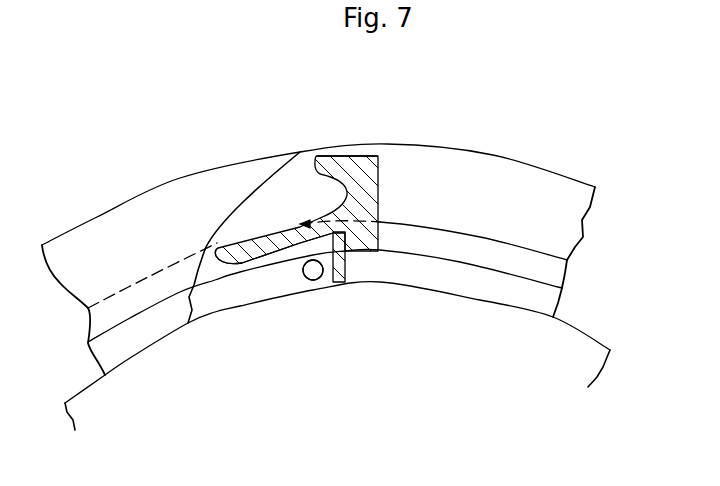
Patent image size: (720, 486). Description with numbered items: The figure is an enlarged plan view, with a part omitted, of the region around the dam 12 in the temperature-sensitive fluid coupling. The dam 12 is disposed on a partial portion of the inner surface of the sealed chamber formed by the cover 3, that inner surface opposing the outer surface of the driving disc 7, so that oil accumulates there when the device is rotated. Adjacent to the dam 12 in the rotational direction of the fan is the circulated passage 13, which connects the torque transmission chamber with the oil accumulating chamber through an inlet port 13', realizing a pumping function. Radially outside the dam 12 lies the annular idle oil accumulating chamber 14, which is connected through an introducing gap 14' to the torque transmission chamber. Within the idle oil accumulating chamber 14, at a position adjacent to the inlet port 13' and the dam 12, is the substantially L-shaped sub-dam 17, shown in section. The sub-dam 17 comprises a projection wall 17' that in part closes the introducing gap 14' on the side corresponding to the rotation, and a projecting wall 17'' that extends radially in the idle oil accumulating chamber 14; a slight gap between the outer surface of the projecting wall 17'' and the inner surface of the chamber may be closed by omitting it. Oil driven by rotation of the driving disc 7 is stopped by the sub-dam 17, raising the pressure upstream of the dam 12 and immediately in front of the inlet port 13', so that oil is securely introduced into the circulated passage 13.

The cover 3 is at (152, 178).
The driving disc 7 is at (497, 307).
The dam 12 is at (340, 282).
The circulated passage 13 is at (295, 301).
The inlet port 13' is at (319, 301).
The idle oil accumulating chamber 14 is at (341, 205).
The introducing gap 14' is at (325, 317).
The sub-dam 17 is at (331, 189).
The projection wall 17' is at (274, 287).
The projecting wall 17'' is at (385, 131).